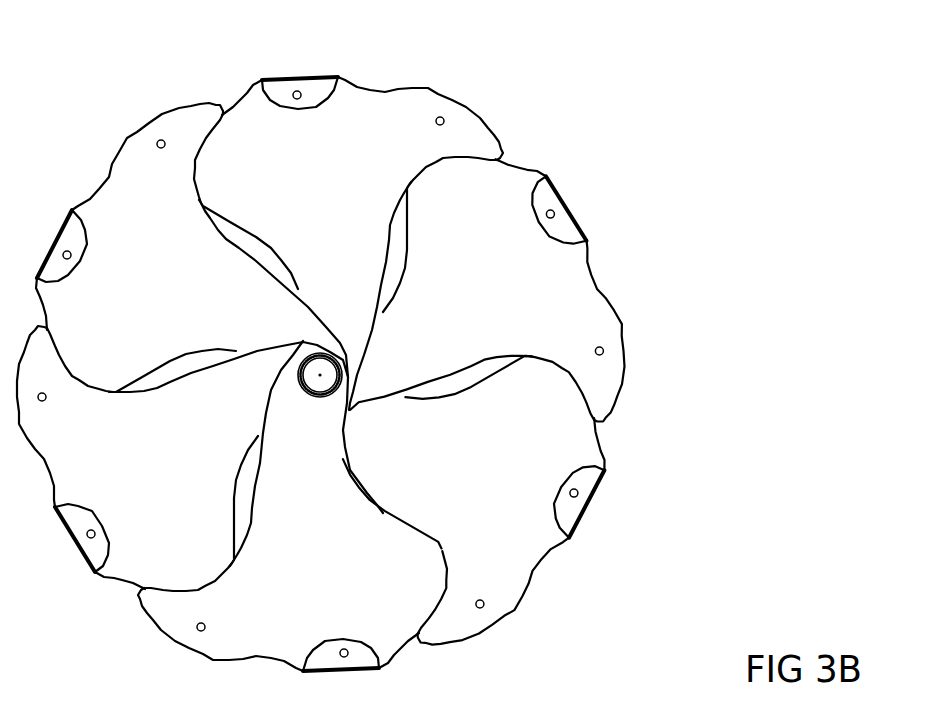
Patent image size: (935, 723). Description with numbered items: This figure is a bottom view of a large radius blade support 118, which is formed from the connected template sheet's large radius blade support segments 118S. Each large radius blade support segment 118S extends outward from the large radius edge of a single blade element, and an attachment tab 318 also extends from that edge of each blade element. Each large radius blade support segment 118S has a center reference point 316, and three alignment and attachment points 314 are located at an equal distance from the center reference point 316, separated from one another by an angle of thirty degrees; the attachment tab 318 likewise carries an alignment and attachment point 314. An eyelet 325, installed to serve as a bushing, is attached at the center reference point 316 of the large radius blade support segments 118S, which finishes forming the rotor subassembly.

The large radius blade support 118 is at (376, 352).
The large radius blade support segment 118S is at (531, 285).
The alignment and attachment point 314 is at (603, 350).
The center reference point 316 is at (321, 373).
The attachment tab 318 is at (548, 202).
The eyelet 325 is at (302, 357).